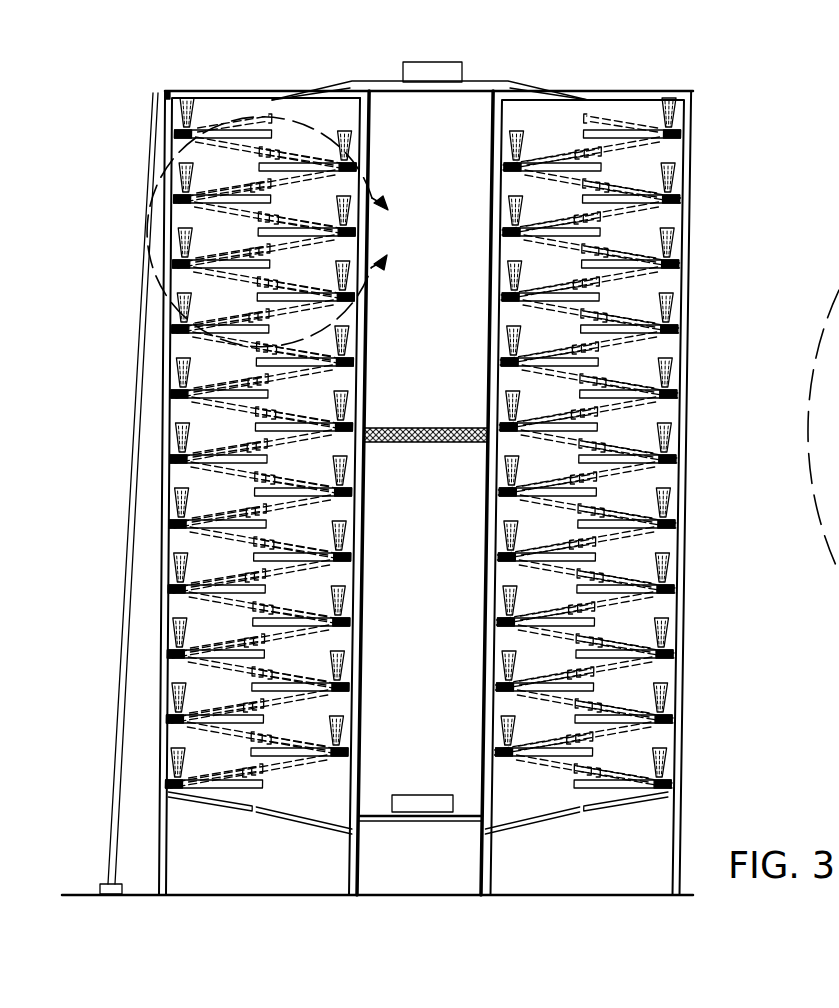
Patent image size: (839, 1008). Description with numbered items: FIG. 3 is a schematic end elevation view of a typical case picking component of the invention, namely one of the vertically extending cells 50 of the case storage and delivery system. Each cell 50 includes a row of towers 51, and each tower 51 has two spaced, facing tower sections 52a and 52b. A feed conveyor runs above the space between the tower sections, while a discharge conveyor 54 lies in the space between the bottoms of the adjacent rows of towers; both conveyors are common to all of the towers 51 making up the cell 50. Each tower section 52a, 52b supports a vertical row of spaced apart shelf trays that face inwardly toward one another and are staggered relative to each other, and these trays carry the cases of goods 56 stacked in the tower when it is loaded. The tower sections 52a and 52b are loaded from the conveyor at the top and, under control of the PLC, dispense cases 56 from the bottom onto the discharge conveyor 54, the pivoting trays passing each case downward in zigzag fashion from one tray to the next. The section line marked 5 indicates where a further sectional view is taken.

The cell 50 is at (193, 80).
The tower 51 is at (276, 93).
The tower section 52a is at (167, 417).
The tower section 52b is at (368, 382).
The discharge conveyor 54 is at (413, 822).
The cases of goods 56 is at (410, 66).
The section line 5- 5 is at (277, 232).